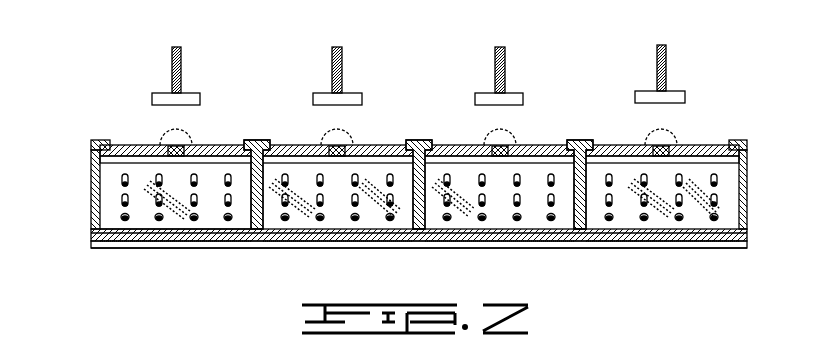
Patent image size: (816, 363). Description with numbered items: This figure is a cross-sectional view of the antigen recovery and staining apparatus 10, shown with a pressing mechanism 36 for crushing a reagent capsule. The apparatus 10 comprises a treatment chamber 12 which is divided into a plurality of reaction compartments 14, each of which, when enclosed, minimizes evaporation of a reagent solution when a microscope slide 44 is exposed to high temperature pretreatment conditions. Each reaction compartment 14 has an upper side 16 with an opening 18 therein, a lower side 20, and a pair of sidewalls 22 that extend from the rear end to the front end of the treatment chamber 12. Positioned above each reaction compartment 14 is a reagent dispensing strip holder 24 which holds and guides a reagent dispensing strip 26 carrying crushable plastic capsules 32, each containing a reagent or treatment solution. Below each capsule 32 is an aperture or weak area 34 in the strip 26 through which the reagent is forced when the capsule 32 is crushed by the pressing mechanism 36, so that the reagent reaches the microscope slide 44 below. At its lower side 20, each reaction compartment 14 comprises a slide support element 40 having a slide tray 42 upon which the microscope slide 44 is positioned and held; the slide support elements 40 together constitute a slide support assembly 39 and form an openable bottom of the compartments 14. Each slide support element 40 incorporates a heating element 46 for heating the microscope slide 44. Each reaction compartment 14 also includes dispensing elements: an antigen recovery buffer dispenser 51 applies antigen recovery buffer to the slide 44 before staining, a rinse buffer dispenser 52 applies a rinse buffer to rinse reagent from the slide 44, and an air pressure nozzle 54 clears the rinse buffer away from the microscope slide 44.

The antigen recovery and staining apparatus 10 is at (100, 75).
The treatment chamber 12 is at (409, 232).
The reaction compartment 14 is at (414, 232).
The upper side 16 is at (100, 176).
The opening 18 is at (140, 160).
The lower side 20 is at (105, 222).
The sidewalls 22 is at (248, 212).
The reagent dispensing strip holder 24 is at (255, 140).
The reagent dispensing strip 26 is at (232, 144).
The capsule 32 is at (171, 146).
The aperture or weak area 34 is at (180, 138).
The pressing mechanism 36 is at (172, 48).
The slide support assembly 39 is at (750, 246).
The slide support element 40 is at (96, 248).
The slide tray 42 is at (91, 234).
The microscope slide 44 is at (137, 226).
The heating element 46 is at (116, 248).
The antigen recovery buffer dispenser 51 is at (200, 215).
The rinse buffer dispenser 52 is at (91, 148).
The air pressure nozzle 54 is at (165, 230).